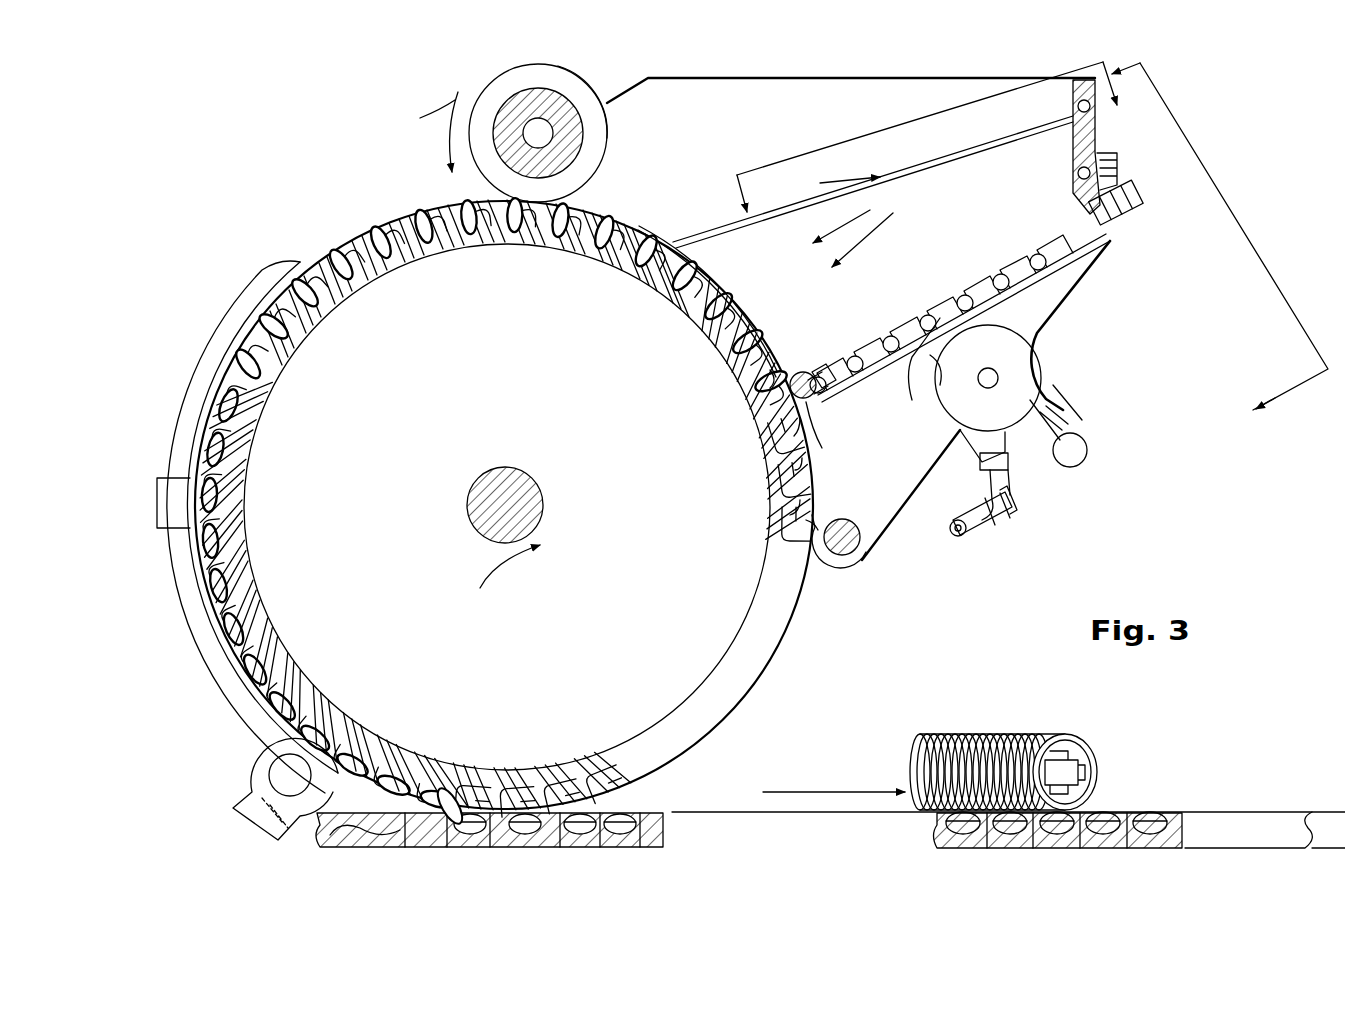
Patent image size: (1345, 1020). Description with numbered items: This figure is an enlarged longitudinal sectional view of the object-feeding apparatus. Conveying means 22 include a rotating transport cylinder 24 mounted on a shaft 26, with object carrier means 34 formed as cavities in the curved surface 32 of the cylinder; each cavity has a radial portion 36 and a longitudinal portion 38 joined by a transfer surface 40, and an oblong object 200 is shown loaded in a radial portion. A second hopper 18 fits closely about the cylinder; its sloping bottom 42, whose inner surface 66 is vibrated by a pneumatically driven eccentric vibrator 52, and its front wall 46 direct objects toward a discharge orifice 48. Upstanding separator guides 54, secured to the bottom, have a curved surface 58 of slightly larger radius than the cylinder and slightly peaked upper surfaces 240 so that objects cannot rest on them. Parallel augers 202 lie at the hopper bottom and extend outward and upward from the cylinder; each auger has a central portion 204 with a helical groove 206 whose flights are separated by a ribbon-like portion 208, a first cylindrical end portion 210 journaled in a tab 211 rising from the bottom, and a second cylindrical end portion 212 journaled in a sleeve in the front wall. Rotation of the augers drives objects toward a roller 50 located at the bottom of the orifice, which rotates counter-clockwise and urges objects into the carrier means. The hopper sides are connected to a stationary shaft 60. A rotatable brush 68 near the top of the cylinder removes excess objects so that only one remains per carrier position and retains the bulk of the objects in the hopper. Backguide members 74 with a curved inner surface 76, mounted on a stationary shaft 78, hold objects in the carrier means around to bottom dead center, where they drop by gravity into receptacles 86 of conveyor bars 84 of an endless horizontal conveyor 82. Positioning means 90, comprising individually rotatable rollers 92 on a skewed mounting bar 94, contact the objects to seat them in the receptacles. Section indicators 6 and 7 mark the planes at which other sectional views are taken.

The second hopper 18 is at (1120, 165).
The conveying means 22 is at (762, 680).
The rotating transport cylinder 24 is at (727, 714).
The shaft 26 is at (512, 468).
The curved surface 32 is at (358, 250).
The object carrier means 34 is at (800, 505).
The radial portion 36 is at (790, 516).
The longitudinal portion 38 is at (790, 476).
The transfer surface 40 is at (800, 462).
The bottom 42 is at (1075, 262).
The front wall 46 is at (1096, 118).
The discharge orifice 48 is at (782, 340).
The roller 50 is at (813, 398).
The vibrator 52 is at (1048, 408).
The separator guides 54 is at (957, 216).
The curved surface 58 is at (705, 292).
The stationary shaft 60 is at (856, 548).
The inner surface 66 is at (915, 404).
The rotatable brush 68 is at (510, 82).
The backguide members 74 is at (195, 660).
The curved inner surface 76 is at (222, 390).
The stationary shaft 78 is at (270, 773).
The horizontal conveyor 82 is at (712, 810).
The conveyor bars 84 is at (1175, 813).
The receptacles 86 is at (330, 835).
The positioning means 90 is at (983, 732).
The rollers 92 is at (1048, 743).
The mounting bar 94 is at (1085, 772).
The object 200 is at (770, 398).
The auger 202 is at (560, 808).
The central portion 204 is at (1055, 312).
The helical groove 206 is at (930, 312).
The ribbon-like portion 208 is at (1025, 268).
The cylindrical end portion 210 is at (820, 366).
The tab 211 is at (818, 376).
The second cylindrical end portion 212 is at (1130, 218).
The upper surfaces 240 is at (868, 176).
The section line 6- 6 is at (927, 139).
The section line 7- 7 is at (1220, 234).